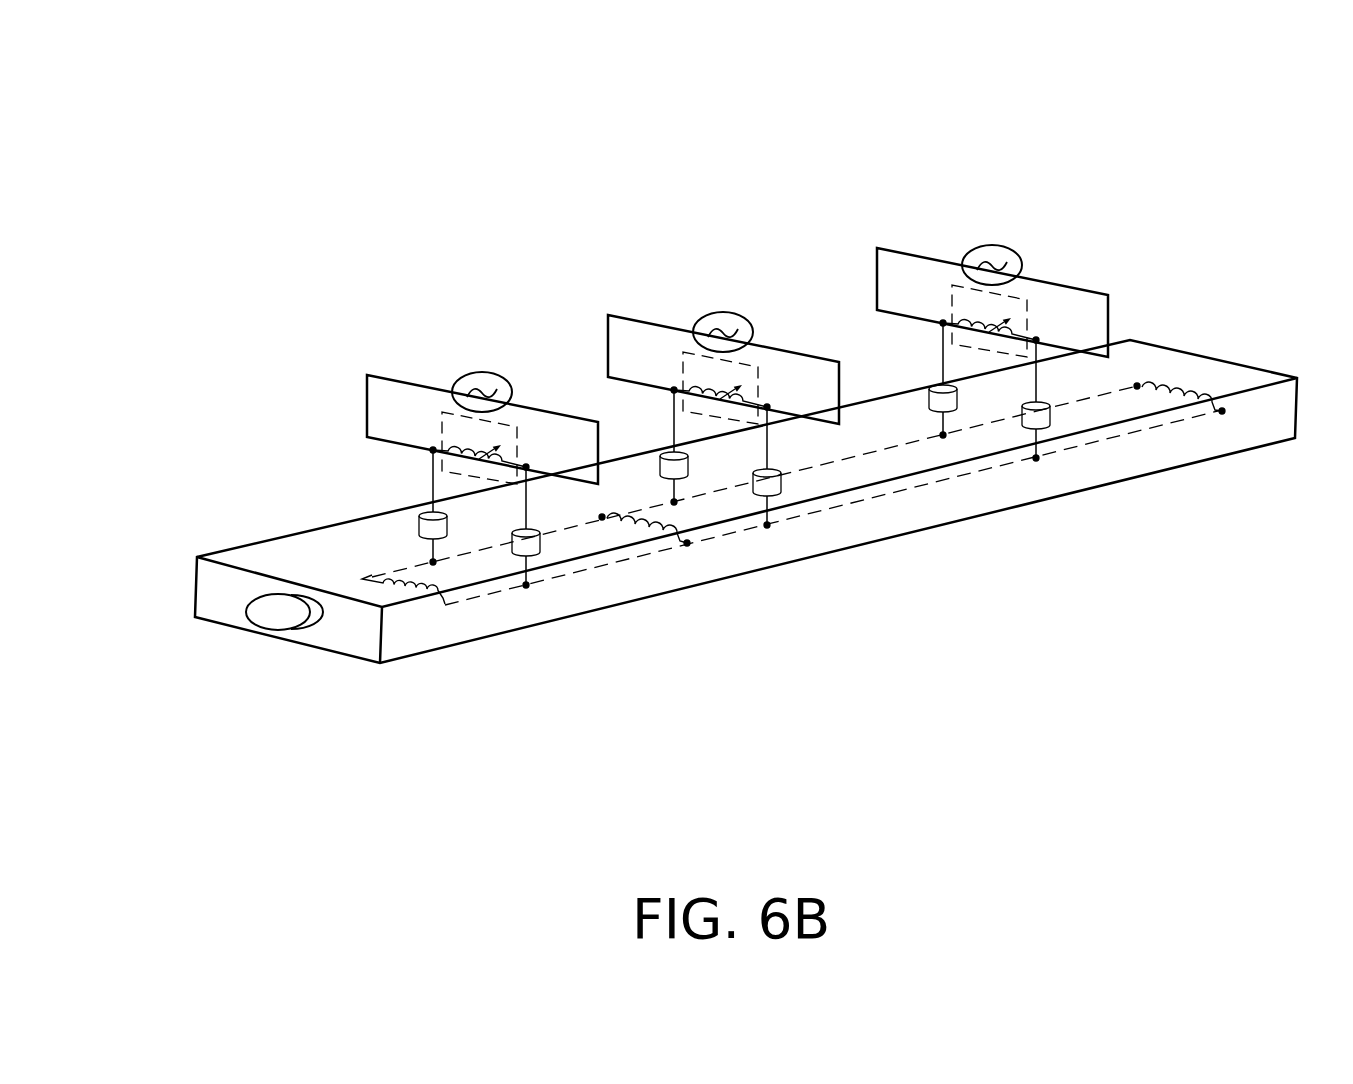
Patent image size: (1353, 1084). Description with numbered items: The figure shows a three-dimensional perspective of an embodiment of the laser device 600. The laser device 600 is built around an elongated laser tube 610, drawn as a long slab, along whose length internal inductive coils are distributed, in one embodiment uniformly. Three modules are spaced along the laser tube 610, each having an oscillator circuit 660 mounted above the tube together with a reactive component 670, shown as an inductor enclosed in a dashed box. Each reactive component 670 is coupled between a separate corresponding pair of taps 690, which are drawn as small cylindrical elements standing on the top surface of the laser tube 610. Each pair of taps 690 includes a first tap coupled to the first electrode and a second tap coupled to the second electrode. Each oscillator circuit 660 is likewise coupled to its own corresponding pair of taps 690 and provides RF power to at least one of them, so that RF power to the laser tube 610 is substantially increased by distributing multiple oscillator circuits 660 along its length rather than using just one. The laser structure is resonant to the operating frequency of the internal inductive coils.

The laser device 600 is at (747, 104).
The laser tube 610 is at (181, 588).
The oscillator circuit 660 is at (744, 312).
The reactive component 670 is at (711, 377).
The taps 690 is at (498, 549).